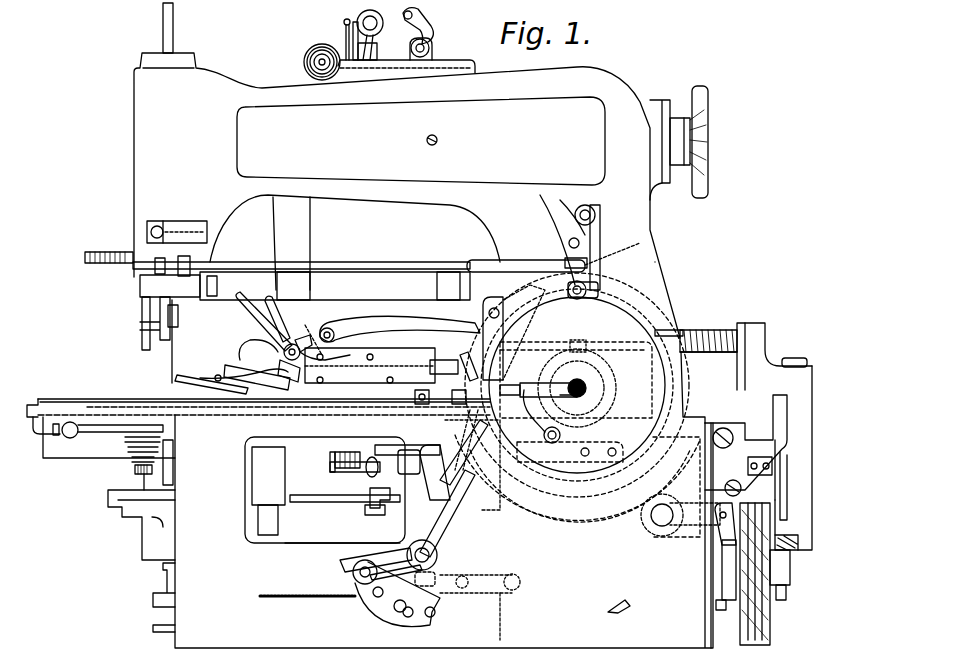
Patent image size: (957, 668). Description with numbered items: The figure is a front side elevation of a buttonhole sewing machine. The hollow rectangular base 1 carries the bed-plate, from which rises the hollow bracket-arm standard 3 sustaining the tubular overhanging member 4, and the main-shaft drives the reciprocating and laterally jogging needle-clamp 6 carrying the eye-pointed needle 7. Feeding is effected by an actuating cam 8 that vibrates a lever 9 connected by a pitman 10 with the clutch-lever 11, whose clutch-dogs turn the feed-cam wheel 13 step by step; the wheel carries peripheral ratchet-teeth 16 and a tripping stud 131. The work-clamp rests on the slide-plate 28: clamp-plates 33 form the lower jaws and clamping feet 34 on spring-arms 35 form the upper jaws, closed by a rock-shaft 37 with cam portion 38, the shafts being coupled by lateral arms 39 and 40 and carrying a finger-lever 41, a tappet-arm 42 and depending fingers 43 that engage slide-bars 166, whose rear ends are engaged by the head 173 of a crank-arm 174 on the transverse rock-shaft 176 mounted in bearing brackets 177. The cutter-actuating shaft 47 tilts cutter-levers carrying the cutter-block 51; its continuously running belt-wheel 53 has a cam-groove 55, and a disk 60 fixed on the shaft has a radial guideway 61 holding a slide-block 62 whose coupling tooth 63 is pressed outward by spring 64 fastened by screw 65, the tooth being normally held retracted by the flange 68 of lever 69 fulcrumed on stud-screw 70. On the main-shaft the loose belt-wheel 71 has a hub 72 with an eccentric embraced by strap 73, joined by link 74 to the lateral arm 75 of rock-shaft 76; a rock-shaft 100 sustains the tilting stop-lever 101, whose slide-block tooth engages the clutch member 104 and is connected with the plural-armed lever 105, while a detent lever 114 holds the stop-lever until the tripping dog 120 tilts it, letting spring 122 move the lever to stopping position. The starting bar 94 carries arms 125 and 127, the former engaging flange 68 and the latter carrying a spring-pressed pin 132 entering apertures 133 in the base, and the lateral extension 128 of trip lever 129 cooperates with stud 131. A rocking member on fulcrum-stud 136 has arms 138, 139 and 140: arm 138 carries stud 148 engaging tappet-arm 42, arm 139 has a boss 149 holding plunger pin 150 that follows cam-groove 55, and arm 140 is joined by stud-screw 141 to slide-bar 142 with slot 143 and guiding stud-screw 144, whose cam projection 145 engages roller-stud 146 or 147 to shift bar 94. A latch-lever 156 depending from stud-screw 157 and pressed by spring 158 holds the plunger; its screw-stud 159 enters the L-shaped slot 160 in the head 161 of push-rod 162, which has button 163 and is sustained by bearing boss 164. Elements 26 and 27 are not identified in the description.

The hollow rectangular base 1 is at (619, 606).
The bracket-arm standard 3 is at (656, 262).
The tubular overhanging member 4 is at (368, 198).
The needle-clamp 6 is at (176, 325).
The eye-pointed needle 7 is at (173, 364).
The actuating cam 8 is at (298, 548).
The lever 9 is at (325, 490).
The pitman 10 is at (325, 502).
The clutch-lever 11 is at (387, 498).
The feed-cam wheel 13 is at (355, 472).
The ratchet-teeth 16 is at (345, 452).
The work support arm 26 is at (72, 438).
The pivot screw 27 is at (66, 438).
The slide-plate 28 is at (36, 399).
The clamp-plates 33 is at (132, 399).
The clamping feet 34 is at (205, 380).
The spring-arms 35 is at (245, 367).
The rock-shaft 37 is at (303, 338).
The cam portion 38 is at (314, 332).
The lateral arm 39 is at (294, 343).
The lateral arm 40 is at (272, 305).
The finger-lever 41 is at (253, 315).
The tappet-arm 42 is at (331, 349).
The depending finger 43 is at (289, 378).
The cutter-actuating shaft 47 is at (578, 380).
The cutter-block 51 is at (257, 380).
The belt-wheel 53 is at (592, 505).
The cam-groove 55 is at (556, 505).
The disk 60 is at (577, 385).
The radial guideway 61 is at (569, 398).
The slide-block 62 is at (548, 389).
The coupling tooth 63 is at (512, 385).
The spring 64 is at (530, 414).
The fastening screw 65 is at (561, 433).
The flange 68 is at (464, 461).
The lever 69 is at (566, 342).
The stud-screw 70 is at (662, 332).
The loose belt-wheel 71 is at (748, 645).
The hub 72 is at (728, 612).
The strap 73 is at (722, 604).
The link 74 is at (715, 540).
The lateral arm 75 is at (690, 503).
The rock-shaft 76 is at (658, 524).
The starting bar 94 is at (417, 551).
The rock-shaft 100 is at (740, 445).
The stop-lever 101 is at (788, 478).
The clutch member 104 is at (780, 590).
The plural-armed lever 105 is at (370, 372).
The detent lever 114 is at (700, 353).
The tripping dog 120 is at (435, 477).
The spring 122 is at (708, 332).
The arm 125 is at (447, 513).
The arm 127 is at (396, 569).
The lateral extension 128 is at (425, 445).
The trip lever 129 is at (400, 450).
The tripping stud 131 is at (360, 450).
The spring-pressed pin 132 is at (370, 560).
The apertures 133 is at (430, 632).
The fulcrum-stud 136 is at (600, 439).
The forwardly extending arm 138 is at (395, 320).
The rearwardly and upwardly extending arm 139 is at (514, 328).
The depending arm 140 is at (498, 512).
The stud-screw 141 is at (522, 582).
The slide-bar 142 is at (497, 616).
The longitudinal slot 143 is at (440, 578).
The guiding stud-screw 144 is at (466, 578).
The cam projection 145 is at (307, 588).
The roller-stud 146 is at (393, 605).
The roller-stud 147 is at (383, 513).
The lateral stud 148 is at (329, 327).
The boss 149 is at (592, 300).
The plunger pin 150 is at (578, 300).
The latch-lever 156 is at (601, 245).
The stud-screw 157 is at (596, 215).
The spring 158 is at (571, 212).
The screw-stud 159 is at (563, 241).
The L-shaped slot 160 is at (566, 262).
The head 161 is at (574, 254).
The push-rod 162 is at (380, 266).
The button 163 is at (150, 264).
The bearing boss 164 is at (185, 240).
The slide-bar 166 is at (444, 370).
The head 173 is at (467, 366).
The crank-arm 174 is at (463, 400).
The transverse rock-shaft 176 is at (465, 440).
The bearing brackets 177 is at (425, 400).